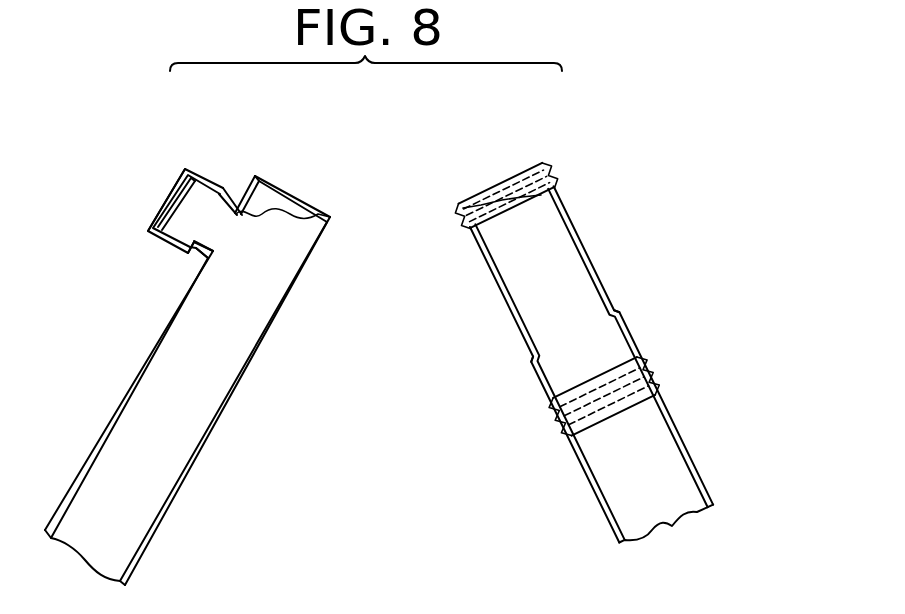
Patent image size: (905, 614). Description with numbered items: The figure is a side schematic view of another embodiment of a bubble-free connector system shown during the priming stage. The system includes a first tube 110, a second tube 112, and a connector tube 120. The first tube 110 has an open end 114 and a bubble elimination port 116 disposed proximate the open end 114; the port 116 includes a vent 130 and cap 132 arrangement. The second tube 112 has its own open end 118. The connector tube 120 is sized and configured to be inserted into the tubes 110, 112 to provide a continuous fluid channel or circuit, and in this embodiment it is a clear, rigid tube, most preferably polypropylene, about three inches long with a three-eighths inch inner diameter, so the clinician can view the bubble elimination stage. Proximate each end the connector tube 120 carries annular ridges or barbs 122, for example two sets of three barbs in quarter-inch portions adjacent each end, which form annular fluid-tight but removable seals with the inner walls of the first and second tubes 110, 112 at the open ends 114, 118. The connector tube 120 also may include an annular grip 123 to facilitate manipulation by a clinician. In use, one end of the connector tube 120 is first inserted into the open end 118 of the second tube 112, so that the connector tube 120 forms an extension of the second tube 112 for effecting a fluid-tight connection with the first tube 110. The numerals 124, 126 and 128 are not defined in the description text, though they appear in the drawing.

The first tube 110 is at (160, 335).
The second tube 112 is at (697, 478).
The open end 114 is at (278, 185).
The bubble elimination port 116 is at (157, 182).
The open end 118 is at (529, 155).
The connector tube 120 is at (621, 314).
The annular barbs 122 is at (547, 172).
The annular grip 123 is at (633, 330).
The edge 124 is at (305, 208).
The panel face 126 is at (272, 268).
The bend 128 is at (197, 252).
The vent 130 is at (200, 202).
The cap 132 is at (157, 213).